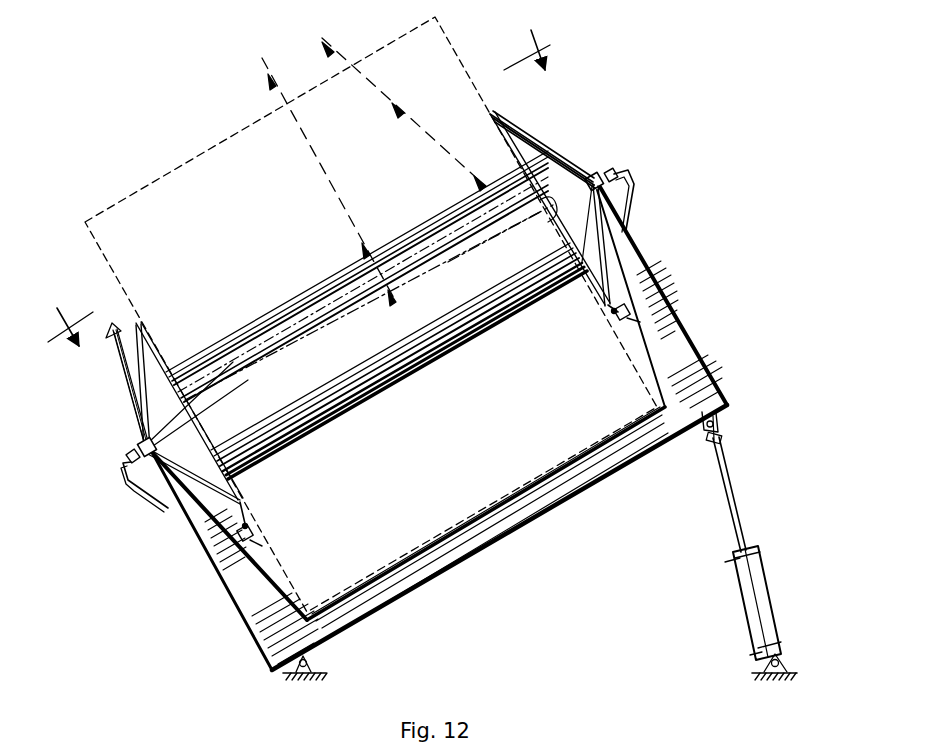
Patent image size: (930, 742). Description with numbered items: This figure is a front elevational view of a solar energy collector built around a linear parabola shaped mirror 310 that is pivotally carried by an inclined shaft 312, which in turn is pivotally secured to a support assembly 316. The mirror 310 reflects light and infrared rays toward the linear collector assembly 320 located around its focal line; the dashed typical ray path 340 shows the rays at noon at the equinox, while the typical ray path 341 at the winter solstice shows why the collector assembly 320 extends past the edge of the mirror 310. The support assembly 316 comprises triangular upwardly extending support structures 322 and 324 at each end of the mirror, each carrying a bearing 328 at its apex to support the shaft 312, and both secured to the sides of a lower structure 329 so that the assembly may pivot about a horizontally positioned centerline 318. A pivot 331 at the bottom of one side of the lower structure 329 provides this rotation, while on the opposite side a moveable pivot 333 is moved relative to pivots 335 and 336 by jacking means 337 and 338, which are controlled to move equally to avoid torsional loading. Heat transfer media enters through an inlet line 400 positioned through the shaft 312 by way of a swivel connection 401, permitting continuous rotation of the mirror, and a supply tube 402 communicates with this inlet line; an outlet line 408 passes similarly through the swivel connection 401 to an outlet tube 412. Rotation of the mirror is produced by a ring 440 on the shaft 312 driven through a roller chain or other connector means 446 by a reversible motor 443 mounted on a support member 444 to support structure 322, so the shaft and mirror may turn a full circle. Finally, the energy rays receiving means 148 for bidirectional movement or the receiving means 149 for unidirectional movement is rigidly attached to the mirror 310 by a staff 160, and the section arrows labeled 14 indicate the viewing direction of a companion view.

The section line 14- 14 is at (295, 183).
The light/infrared energy rays receiving means 148 is at (110, 323).
The receiving means 149 is at (87, 348).
The staff 160 is at (125, 352).
The linear parabola shaped mirror 310 is at (348, 413).
The inclined shaft 312 is at (513, 200).
The support assembly 316 is at (236, 619).
The horizontally positioned centerline 318 is at (316, 660).
The linear collector assembly 320 is at (348, 269).
The upwardly extending support structure 322 is at (226, 602).
The upwardly extending support structure 324 is at (684, 298).
The bearing 328 is at (138, 442).
The lower structure 329 is at (487, 544).
The pivot 331 is at (318, 678).
The moveable pivot 333 is at (722, 425).
The pivot 335 is at (788, 664).
The pivot 336 is at (803, 646).
The jacking means 337 is at (748, 620).
The jacking means 338 is at (718, 527).
The typical ray path 340 is at (330, 186).
The typical ray path 341 is at (432, 130).
The inlet line 400 is at (122, 478).
The swivel connection 401 is at (128, 453).
The supply tube 402 is at (188, 412).
The outlet line 408 is at (634, 196).
The outlet tube 412 is at (505, 238).
The ring 440 is at (243, 505).
The reversible motor 443 is at (256, 531).
The support member 444 is at (250, 543).
The roller chain or other connector means 446 is at (250, 522).